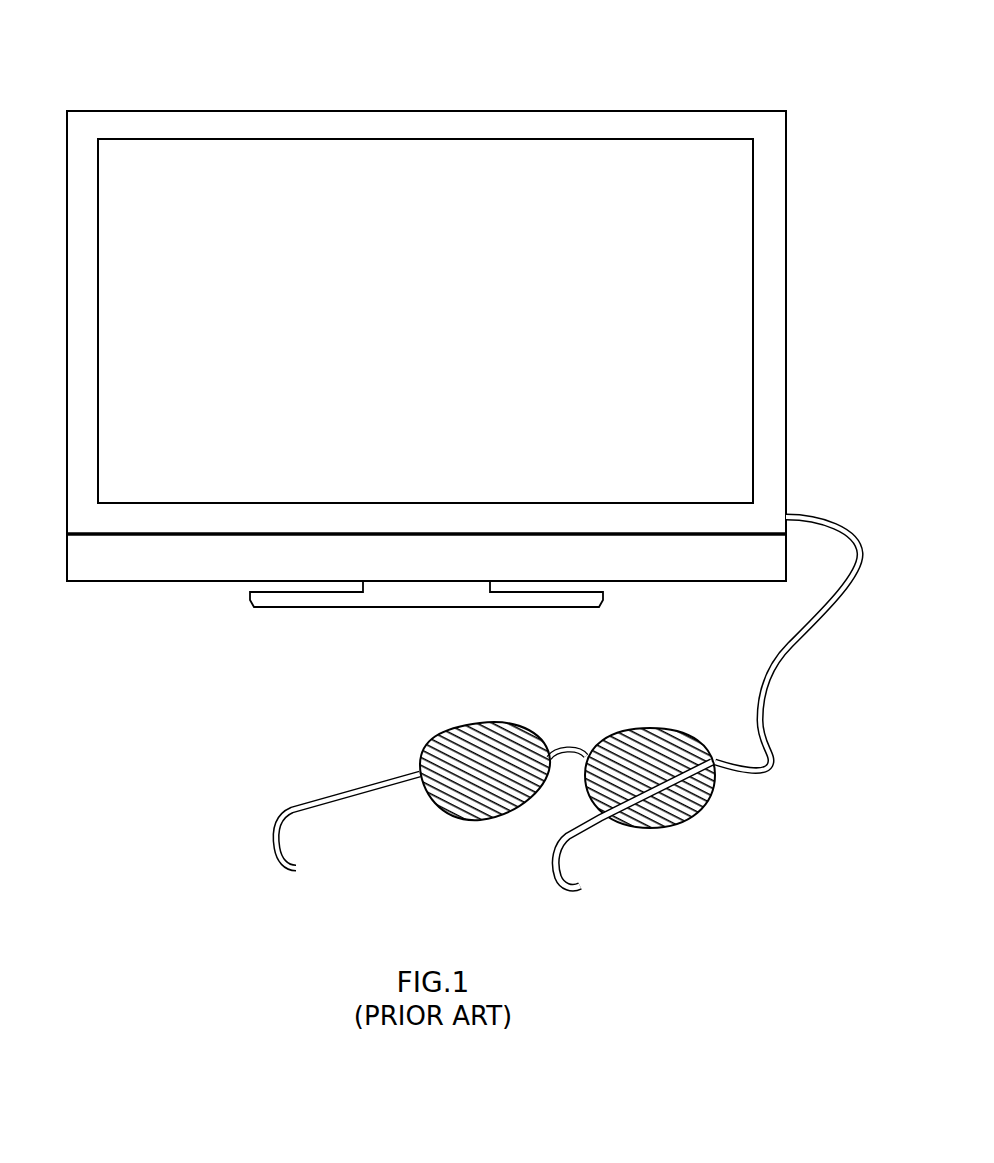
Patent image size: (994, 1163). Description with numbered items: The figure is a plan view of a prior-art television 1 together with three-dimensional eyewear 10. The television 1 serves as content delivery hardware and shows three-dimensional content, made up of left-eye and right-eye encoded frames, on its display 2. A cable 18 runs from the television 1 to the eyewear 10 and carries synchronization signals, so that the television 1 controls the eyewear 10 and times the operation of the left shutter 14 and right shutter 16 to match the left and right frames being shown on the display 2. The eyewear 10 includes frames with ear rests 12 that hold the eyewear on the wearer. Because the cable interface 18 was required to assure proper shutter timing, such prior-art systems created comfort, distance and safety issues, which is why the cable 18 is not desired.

The television 1 is at (818, 240).
The display 2 is at (564, 172).
The three-dimensional eyewear 10 is at (548, 772).
The ear rests 12 is at (600, 832).
The left shutter 14 is at (497, 748).
The right shutter 16 is at (656, 750).
The cable 18 is at (856, 553).